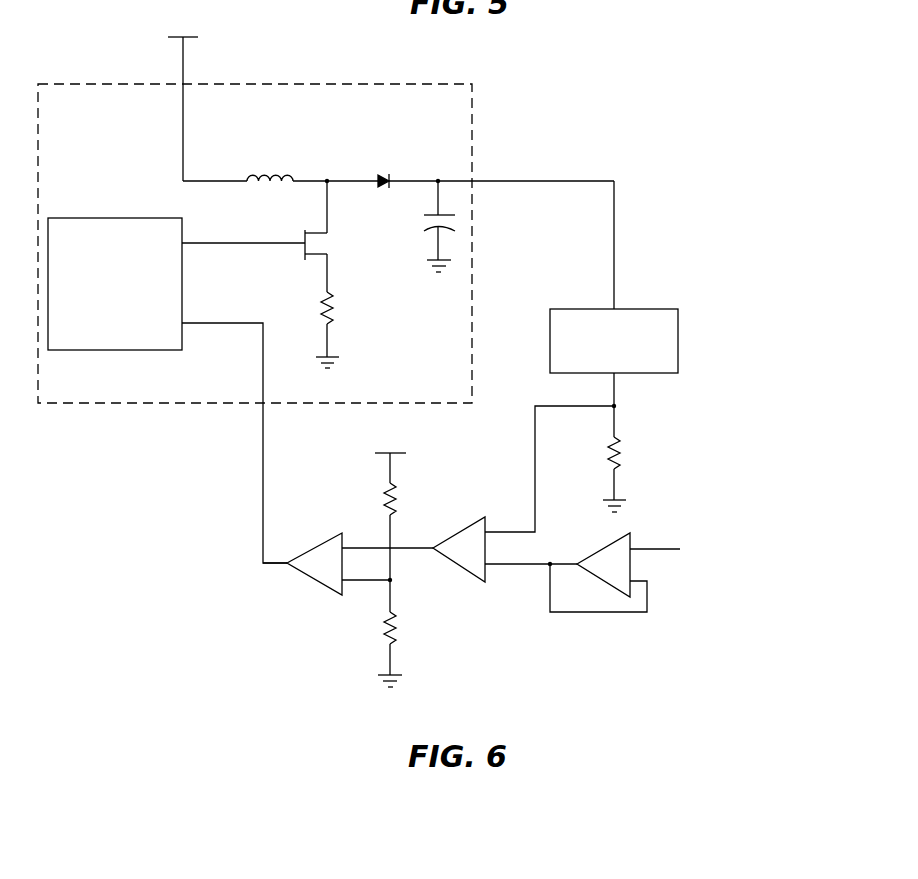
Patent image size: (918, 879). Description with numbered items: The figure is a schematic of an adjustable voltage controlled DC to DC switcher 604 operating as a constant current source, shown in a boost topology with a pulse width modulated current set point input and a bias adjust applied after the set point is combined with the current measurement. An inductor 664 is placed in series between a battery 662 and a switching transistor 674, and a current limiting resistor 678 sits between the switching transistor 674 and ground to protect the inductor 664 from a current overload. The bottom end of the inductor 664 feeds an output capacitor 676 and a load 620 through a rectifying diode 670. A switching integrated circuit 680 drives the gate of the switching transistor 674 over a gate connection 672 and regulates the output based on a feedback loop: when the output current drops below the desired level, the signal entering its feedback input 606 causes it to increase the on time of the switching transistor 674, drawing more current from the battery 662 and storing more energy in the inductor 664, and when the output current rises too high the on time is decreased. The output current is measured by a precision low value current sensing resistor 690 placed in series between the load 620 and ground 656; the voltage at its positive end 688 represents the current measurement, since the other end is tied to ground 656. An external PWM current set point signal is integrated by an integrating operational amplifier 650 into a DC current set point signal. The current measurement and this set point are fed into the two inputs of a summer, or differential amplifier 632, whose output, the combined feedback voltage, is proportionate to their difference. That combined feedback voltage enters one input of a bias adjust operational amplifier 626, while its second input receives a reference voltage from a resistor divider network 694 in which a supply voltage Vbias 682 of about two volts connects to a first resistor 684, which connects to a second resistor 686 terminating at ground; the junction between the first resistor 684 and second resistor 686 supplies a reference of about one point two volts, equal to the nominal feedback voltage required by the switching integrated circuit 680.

The battery 662 is at (172, 38).
The DC to DC switcher 604 is at (472, 151).
The inductor 664 is at (292, 176).
The rectifying diode 670 is at (381, 174).
The output capacitor 676 is at (424, 215).
The switching transistor 674 is at (305, 230).
The gate drive line 672 is at (198, 245).
The current limiting resistor 678 is at (338, 300).
The switching integrated circuit 680 is at (110, 352).
The feedback input 606 is at (200, 325).
The load 620 is at (550, 354).
The positive end 688 is at (614, 422).
The current sensing resistor 690 is at (620, 452).
The ground 656 is at (620, 500).
The supply voltage (Vbias) 682 is at (378, 455).
The first resistor 684 is at (397, 498).
The bias adjust operational amplifier 626 is at (308, 580).
The summer, or differential amplifier 632 is at (458, 568).
The integrating operational amplifier 650 is at (598, 548).
The second resistor 686 is at (395, 620).
The resistor divider network 694 is at (365, 640).